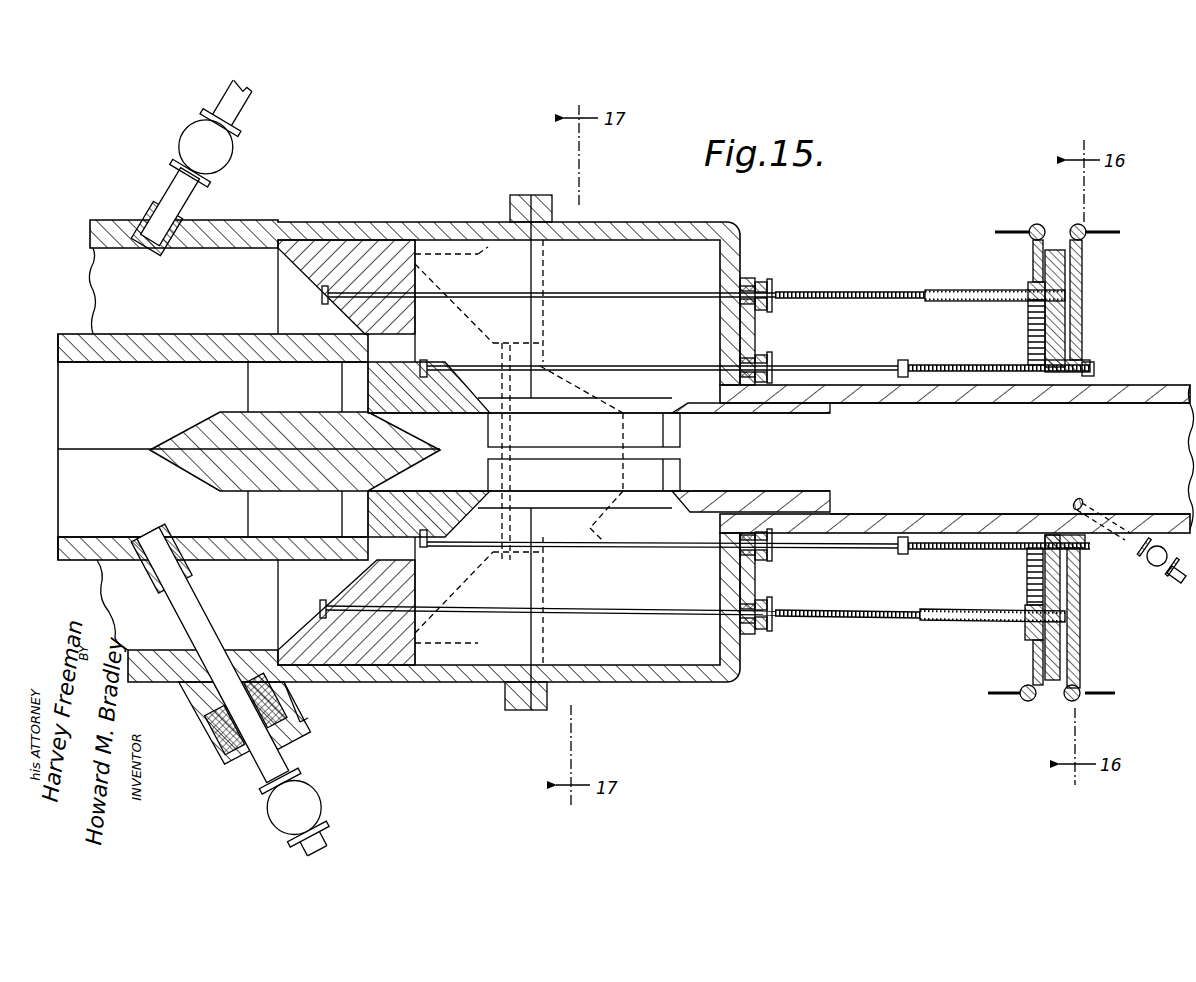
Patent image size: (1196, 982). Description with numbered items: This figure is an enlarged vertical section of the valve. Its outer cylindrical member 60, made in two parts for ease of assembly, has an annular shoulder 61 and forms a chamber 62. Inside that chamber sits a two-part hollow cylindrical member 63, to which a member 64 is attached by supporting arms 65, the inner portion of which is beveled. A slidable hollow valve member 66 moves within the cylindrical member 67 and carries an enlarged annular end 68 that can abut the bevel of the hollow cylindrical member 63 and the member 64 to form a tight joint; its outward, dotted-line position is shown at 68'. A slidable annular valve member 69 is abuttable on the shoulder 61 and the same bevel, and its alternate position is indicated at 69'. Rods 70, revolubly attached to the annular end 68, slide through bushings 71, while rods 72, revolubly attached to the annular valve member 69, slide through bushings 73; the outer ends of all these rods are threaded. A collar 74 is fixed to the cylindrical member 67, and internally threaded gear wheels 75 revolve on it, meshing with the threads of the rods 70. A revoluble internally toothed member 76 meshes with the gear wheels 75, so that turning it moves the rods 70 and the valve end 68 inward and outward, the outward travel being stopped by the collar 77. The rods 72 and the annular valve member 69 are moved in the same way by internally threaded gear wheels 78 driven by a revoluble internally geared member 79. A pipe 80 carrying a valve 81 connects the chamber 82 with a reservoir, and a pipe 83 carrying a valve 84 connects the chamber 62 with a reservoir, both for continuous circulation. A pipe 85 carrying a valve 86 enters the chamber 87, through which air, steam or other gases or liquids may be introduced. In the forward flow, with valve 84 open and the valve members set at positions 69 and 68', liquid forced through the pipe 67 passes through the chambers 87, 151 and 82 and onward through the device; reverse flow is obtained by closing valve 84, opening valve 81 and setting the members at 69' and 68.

The cylindrical member 60 is at (243, 220).
The annular shoulder 61 is at (343, 240).
The chamber 62 is at (213, 593).
The hollow cylindrical member 63 is at (170, 334).
The member 64 is at (285, 410).
The supporting arms 65 is at (252, 384).
The slidable hollow valve member 66 is at (722, 491).
The cylindrical member 67 is at (1141, 385).
The enlarged annular end 68 is at (520, 514).
The dotted-line position of enlarged annular end 68' is at (527, 578).
The slidable annular valve member 69 is at (520, 429).
The alternate position of annular valve member 69' is at (519, 400).
The rods 70 is at (608, 359).
The bushings 71 is at (773, 366).
The rods 72 is at (681, 300).
The bushings 73 is at (772, 288).
The collar 74 is at (1055, 250).
The gear wheels 75 is at (1088, 370).
The internally toothed member 76 is at (1083, 326).
The collar 77 is at (905, 365).
The gear wheels 78 is at (1028, 284).
The internally geared member 79 is at (1026, 584).
The pipe 80 is at (280, 752).
The valve 81 is at (318, 788).
The chamber 82 is at (249, 476).
The pipe 83 is at (256, 100).
The valve 84 is at (233, 150).
The pipe 85 is at (1138, 546).
The valve 86 is at (1158, 572).
The chamber 87 is at (1010, 458).
The chamber 151 is at (584, 475).